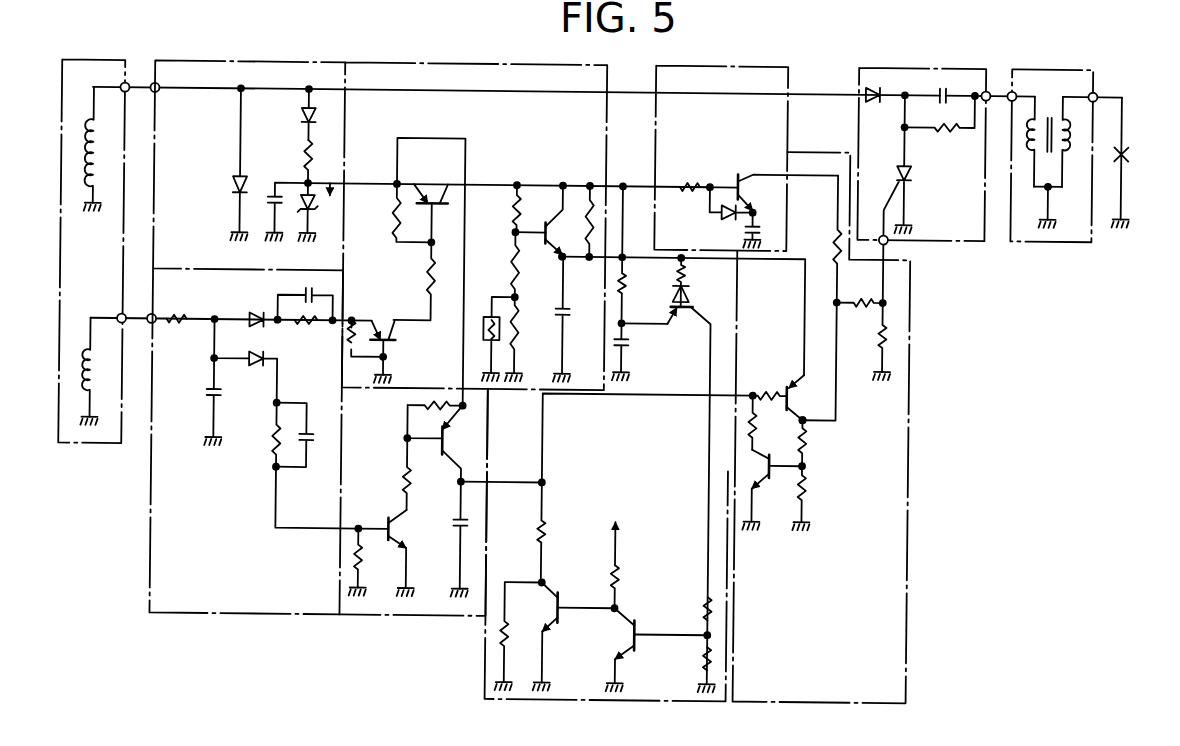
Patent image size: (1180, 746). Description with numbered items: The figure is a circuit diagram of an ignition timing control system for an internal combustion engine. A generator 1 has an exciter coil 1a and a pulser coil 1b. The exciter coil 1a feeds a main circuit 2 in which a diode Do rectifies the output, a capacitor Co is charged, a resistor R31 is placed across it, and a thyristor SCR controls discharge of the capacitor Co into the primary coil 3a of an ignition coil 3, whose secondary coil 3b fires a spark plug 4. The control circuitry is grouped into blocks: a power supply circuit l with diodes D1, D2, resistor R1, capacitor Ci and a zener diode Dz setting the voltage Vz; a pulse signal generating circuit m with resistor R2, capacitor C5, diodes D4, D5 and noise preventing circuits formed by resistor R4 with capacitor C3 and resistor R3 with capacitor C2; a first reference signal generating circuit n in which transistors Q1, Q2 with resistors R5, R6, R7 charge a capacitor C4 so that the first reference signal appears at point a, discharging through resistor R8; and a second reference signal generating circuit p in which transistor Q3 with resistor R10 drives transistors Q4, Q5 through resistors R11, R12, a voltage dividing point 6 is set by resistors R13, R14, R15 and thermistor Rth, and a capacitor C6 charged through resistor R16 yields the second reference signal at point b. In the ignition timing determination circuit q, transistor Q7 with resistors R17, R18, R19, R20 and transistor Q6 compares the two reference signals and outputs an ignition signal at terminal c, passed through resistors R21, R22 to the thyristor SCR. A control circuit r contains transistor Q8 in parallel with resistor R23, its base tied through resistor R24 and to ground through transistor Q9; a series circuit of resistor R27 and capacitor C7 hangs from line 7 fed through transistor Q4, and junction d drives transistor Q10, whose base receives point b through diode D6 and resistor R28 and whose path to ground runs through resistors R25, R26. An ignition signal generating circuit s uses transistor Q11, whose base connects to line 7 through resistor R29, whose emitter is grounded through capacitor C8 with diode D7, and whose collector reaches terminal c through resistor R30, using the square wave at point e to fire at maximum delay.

The generator 1 is at (108, 449).
The exciter coil 1a is at (100, 142).
The pulser coil 1b is at (96, 366).
The main circuit 2 is at (929, 65).
The ignition coil 3 is at (1031, 66).
The primary coil 3a is at (1034, 150).
The secondary coil 3b is at (1068, 138).
The spark plug 4 is at (1126, 151).
The voltage dividing point 6 is at (511, 233).
The power supply line 7 is at (641, 186).
The power supply circuit l is at (223, 65).
The pulse signal generating circuit m is at (282, 618).
The first reference signal generating circuit n is at (428, 618).
The second reference signal generating circuit p is at (442, 64).
The ignition timing determination circuit q is at (857, 702).
The first reference signal control circuit r is at (617, 703).
The ignition signal generating circuit s is at (725, 65).
The point a is at (590, 439).
The point b is at (549, 268).
The ignition signal output terminal c is at (806, 420).
The junction d is at (625, 321).
The point e is at (622, 208).
The diode D1 is at (299, 116).
The diode D2 is at (232, 186).
The diode D4 is at (255, 369).
The diode D5 is at (257, 316).
The diode D6 is at (689, 293).
The diode D7 is at (719, 214).
The zener diode Dz is at (312, 205).
The diode Do is at (887, 111).
The resistor R1 is at (303, 158).
The resistor R2 is at (181, 306).
The resistor R3 is at (273, 441).
The resistor R4 is at (303, 328).
The resistor R5 is at (364, 556).
The resistor R6 is at (403, 484).
The resistor R7 is at (436, 416).
The resistor R8 is at (548, 530).
The resistor R10 is at (347, 345).
The resistor R11 is at (437, 286).
The resistor R12 is at (393, 214).
The resistor R13 is at (512, 212).
The resistor R14 is at (512, 262).
The resistor R15 is at (519, 330).
The resistor R16 is at (587, 212).
The resistor R17 is at (769, 392).
The resistor R18 is at (756, 424).
The resistor R19 is at (805, 446).
The resistor R20 is at (807, 493).
The resistor R21 is at (860, 319).
The resistor R22 is at (888, 337).
The resistor R23 is at (514, 630).
The resistor R24 is at (622, 578).
The resistor R25 is at (704, 607).
The resistor R26 is at (704, 660).
The resistor R27 is at (632, 278).
The resistor R28 is at (702, 272).
The resistor R29 is at (703, 168).
The resistor R30 is at (833, 235).
The resistor R31 is at (941, 126).
The thermistor Rth is at (482, 330).
The capacitor C2 is at (309, 433).
The capacitor C3 is at (314, 285).
The capacitor C4 is at (457, 526).
The capacitor C5 is at (208, 394).
The capacitor C6 is at (563, 318).
The capacitor C7 is at (626, 347).
The capacitor C8 is at (758, 224).
The capacitor Ci is at (272, 207).
The capacitor Co is at (959, 87).
The transistor Q1 is at (386, 520).
The transistor Q2 is at (447, 440).
The transistor Q3 is at (376, 334).
The transistor Q4 is at (426, 198).
The transistor Q5 is at (554, 222).
The transistor Q6 is at (760, 481).
The transistor Q7 is at (791, 392).
The transistor Q8 is at (563, 596).
The transistor Q9 is at (632, 634).
The transistor Q10 is at (677, 318).
The transistor Q11 is at (742, 171).
The thyristor SCR is at (911, 173).
The voltage Vz is at (331, 199).